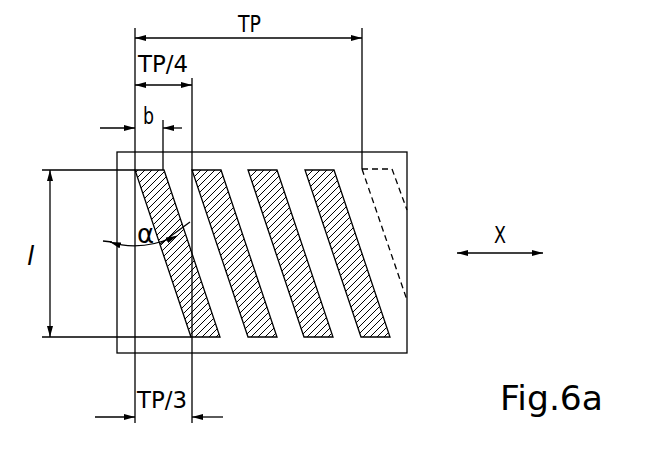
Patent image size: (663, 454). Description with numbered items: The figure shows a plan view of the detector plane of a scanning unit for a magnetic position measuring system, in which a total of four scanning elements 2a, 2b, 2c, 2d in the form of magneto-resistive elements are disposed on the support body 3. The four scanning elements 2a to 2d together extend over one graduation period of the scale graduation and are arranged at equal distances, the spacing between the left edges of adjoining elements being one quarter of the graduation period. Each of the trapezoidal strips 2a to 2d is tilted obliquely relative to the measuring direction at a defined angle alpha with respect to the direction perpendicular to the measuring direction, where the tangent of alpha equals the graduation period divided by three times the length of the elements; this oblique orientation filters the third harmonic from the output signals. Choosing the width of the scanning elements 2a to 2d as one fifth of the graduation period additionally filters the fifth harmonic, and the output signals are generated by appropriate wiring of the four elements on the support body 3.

The scanning element 2a is at (213, 337).
The scanning element 2b is at (263, 337).
The scanning element 2c is at (322, 337).
The scanning element 2d is at (380, 337).
The support body 3 is at (127, 348).